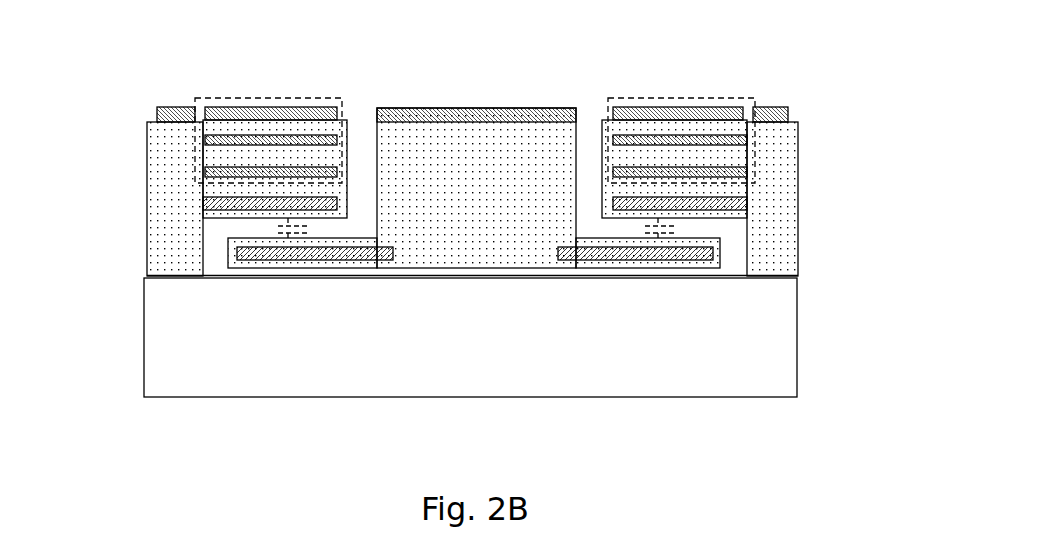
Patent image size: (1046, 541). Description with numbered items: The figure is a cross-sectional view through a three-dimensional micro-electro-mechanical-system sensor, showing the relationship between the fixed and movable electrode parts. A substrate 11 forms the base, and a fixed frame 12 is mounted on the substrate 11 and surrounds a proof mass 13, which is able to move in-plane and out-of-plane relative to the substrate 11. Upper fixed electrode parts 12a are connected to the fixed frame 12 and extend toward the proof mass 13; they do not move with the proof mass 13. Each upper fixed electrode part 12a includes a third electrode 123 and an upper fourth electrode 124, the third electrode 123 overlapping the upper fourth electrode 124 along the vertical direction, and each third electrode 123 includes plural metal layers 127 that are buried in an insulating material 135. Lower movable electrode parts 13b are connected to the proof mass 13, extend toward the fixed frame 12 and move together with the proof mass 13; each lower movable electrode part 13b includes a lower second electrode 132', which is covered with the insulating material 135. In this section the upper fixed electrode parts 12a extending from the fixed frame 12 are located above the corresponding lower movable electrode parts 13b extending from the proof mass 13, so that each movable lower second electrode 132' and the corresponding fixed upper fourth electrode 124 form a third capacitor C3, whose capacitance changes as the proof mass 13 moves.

The substrate 11 is at (188, 332).
The fixed frame 12 is at (829, 152).
The upper fixed electrode part 12a is at (348, 96).
The proof mass 13 is at (467, 94).
The lower movable electrode part 13b is at (620, 277).
The third electrode 123 is at (245, 127).
The upper fourth electrode 124 is at (203, 197).
The metal layers 127 is at (305, 110).
The lower second electrode 132' is at (378, 240).
The insulating material 135 is at (243, 112).
The third capacitor C3 is at (494, 231).